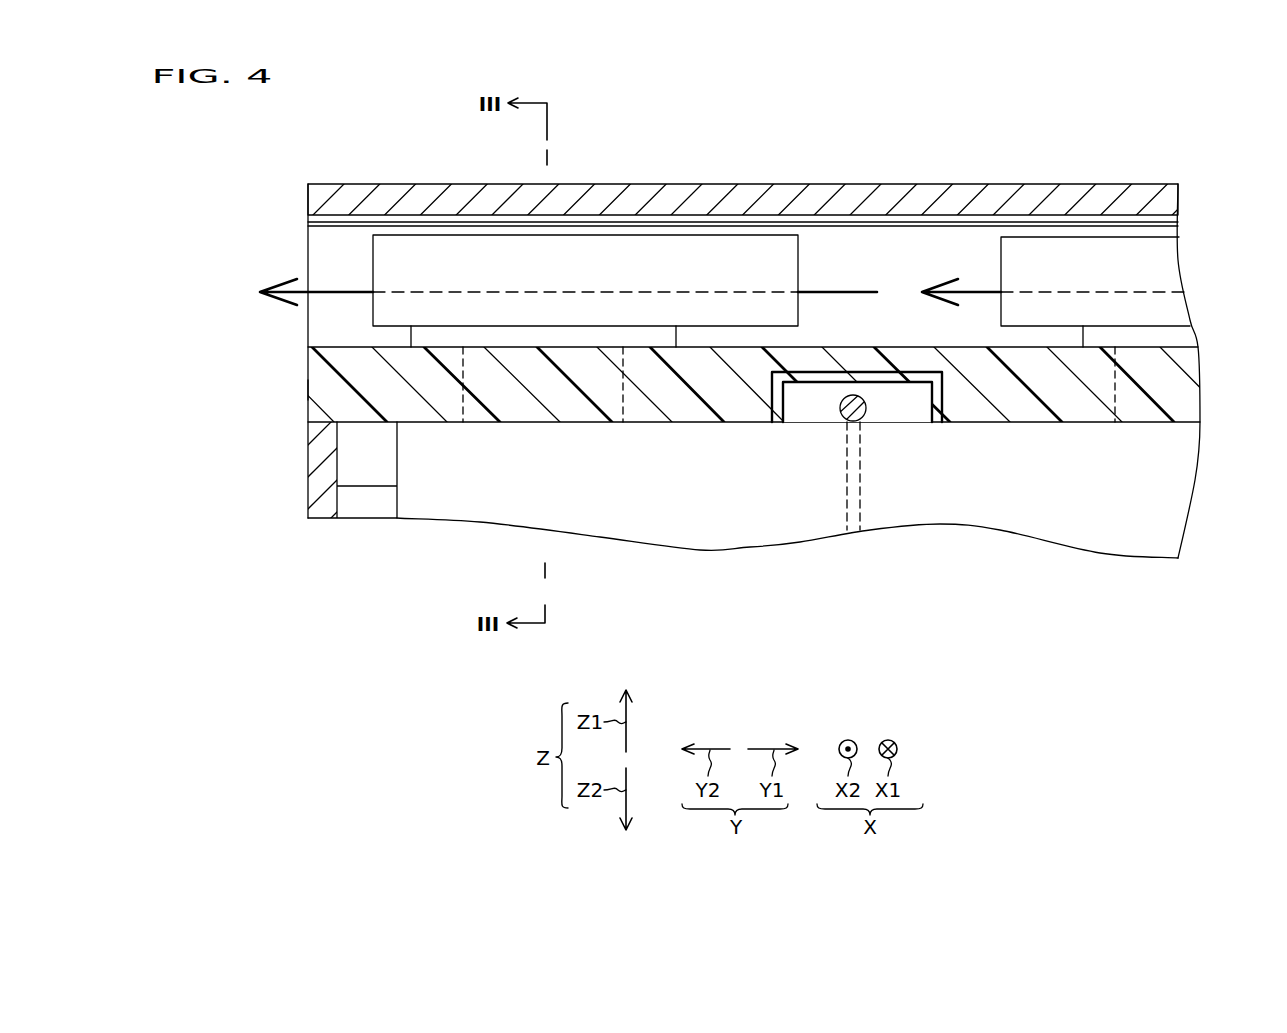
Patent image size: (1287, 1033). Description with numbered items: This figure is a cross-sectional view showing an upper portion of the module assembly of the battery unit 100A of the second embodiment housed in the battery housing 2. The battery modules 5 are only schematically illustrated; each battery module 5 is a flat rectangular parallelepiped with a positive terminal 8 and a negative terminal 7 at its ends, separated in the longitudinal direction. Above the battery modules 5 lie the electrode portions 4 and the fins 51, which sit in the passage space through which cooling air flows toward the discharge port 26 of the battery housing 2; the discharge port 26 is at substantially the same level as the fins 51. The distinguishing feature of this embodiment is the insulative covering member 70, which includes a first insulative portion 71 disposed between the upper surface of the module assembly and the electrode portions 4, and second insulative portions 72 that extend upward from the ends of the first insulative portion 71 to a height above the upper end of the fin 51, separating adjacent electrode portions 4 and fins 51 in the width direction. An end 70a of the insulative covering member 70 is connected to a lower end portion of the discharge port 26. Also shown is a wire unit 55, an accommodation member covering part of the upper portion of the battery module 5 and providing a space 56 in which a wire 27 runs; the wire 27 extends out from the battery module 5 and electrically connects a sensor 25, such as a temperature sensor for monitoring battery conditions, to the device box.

The battery unit 100A is at (1065, 141).
The battery housing 2 is at (717, 184).
The discharge port 26 is at (308, 222).
The fin 51 is at (792, 262).
The insulative covering member 70 is at (229, 308).
The second insulative portion 72 is at (318, 327).
The first insulative portion 71 is at (318, 378).
The end of insulative covering member 70a is at (308, 391).
The electrode portion 4 is at (588, 335).
The battery module 5 is at (700, 520).
The negative terminal 7 is at (512, 403).
The positive terminal 8 is at (1140, 408).
The space 56 is at (809, 410).
The sensor 25 is at (860, 500).
The wire 27 is at (868, 412).
The wire unit 55 is at (927, 410).